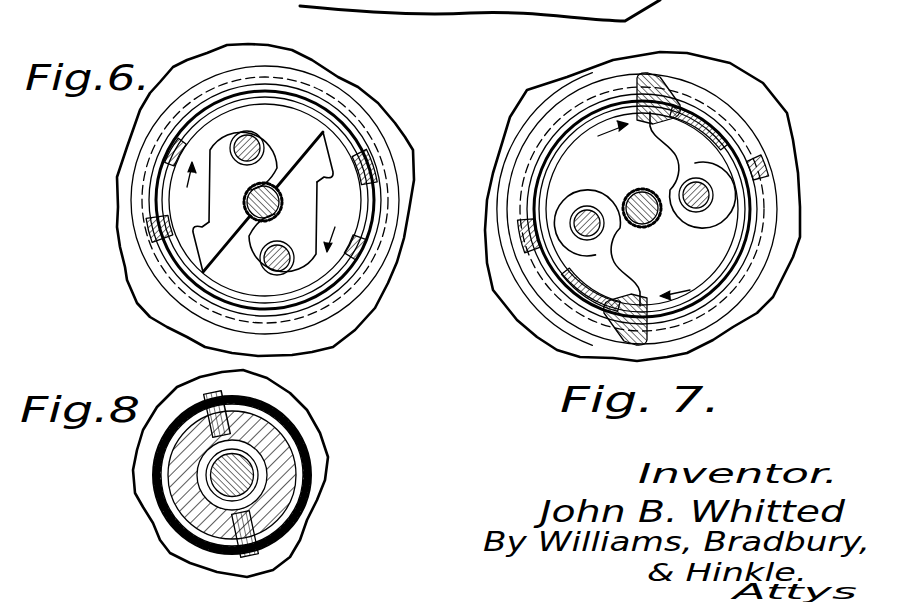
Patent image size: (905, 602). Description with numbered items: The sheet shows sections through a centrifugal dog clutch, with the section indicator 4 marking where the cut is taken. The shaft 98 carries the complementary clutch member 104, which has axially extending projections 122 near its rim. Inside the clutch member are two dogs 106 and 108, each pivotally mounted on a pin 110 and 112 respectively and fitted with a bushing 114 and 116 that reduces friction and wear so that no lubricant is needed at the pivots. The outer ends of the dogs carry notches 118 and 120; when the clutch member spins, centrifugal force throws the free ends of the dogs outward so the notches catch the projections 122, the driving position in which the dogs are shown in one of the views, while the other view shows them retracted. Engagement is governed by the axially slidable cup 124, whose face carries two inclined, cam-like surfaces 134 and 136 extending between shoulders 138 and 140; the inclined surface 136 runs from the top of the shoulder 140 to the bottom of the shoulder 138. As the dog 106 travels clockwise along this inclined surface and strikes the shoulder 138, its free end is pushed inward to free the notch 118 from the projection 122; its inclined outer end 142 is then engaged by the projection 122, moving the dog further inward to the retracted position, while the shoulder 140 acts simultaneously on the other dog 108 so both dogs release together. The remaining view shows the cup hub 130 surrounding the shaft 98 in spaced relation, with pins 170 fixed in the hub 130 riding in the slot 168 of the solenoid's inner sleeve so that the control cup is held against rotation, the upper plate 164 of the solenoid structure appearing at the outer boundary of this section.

In FIG. 7, the section line 4- 4 is at (530, 0).
In FIG. 6, the shaft 98 is at (278, 188).
In FIG. 7, the shaft 98 is at (634, 190).
In FIG. 8, the shaft 98 is at (245, 468).
In FIG. 6, the complementary clutch member 104 is at (197, 234).
In FIG. 7, the complementary clutch member 104 is at (700, 266).
In FIG. 6, the dog 106 is at (330, 152).
In FIG. 7, the dog 106 is at (665, 90).
In FIG. 6, the dog 108 is at (192, 245).
In FIG. 7, the dog 108 is at (598, 318).
In FIG. 6, the pin 110 is at (246, 134).
In FIG. 7, the pin 110 is at (573, 214).
In FIG. 6, the pin 112 is at (278, 262).
In FIG. 7, the pin 112 is at (712, 190).
In FIG. 7, the bushing 114 is at (713, 202).
In FIG. 7, the bushing 116 is at (535, 275).
In FIG. 6, the notch 118 is at (330, 184).
In FIG. 7, the notch 118 is at (640, 113).
In FIG. 6, the notch 120 is at (210, 214).
In FIG. 7, the notch 120 is at (662, 320).
In FIG. 6, the axially extending projections 122 is at (360, 195).
In FIG. 7, the axially extending projections 122 is at (713, 133).
In FIG. 6, the cup 124 is at (146, 131).
In FIG. 7, the cup 124 is at (556, 105).
In FIG. 8, the hub 130 is at (292, 472).
In FIG. 6, the inclined surface 134 is at (358, 287).
In FIG. 7, the inclined surface 134 is at (752, 297).
In FIG. 6, the inclined surface 136 is at (186, 97).
In FIG. 7, the inclined surface 136 is at (543, 128).
In FIG. 7, the shoulder 138 is at (740, 180).
In FIG. 6, the shoulder 140 is at (150, 241).
In FIG. 7, the shoulder 140 is at (520, 228).
In FIG. 6, the outer end 142 is at (150, 300).
In FIG. 7, the outer end 142 is at (662, 92).
In FIG. 8, the upper plate 164 is at (308, 432).
In FIG. 8, the slot 168 is at (310, 497).
In FIG. 8, the pins 170 is at (203, 398).